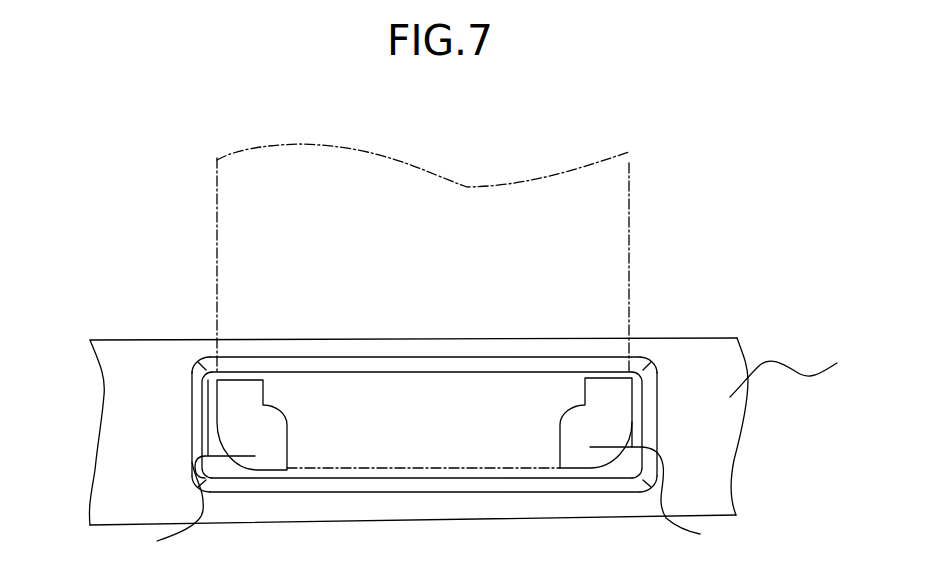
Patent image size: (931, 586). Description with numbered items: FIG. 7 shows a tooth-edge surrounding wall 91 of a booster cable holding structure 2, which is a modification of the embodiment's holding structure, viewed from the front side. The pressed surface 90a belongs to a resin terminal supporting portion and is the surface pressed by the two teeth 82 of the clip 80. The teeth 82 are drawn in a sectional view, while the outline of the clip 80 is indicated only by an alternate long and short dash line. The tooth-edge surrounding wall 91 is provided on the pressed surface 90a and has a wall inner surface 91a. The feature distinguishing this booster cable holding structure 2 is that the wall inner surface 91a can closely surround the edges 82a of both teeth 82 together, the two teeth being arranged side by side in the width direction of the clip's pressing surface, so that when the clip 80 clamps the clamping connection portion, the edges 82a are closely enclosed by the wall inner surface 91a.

The booster cable holding structure 2 is at (740, 316).
The clip 80 is at (217, 250).
The teeth 82 is at (424, 424).
The edges 82a is at (431, 503).
The pressed surface 90a is at (791, 369).
The tooth-edge surrounding wall 91 is at (197, 412).
The wall inner surface 91a is at (637, 377).